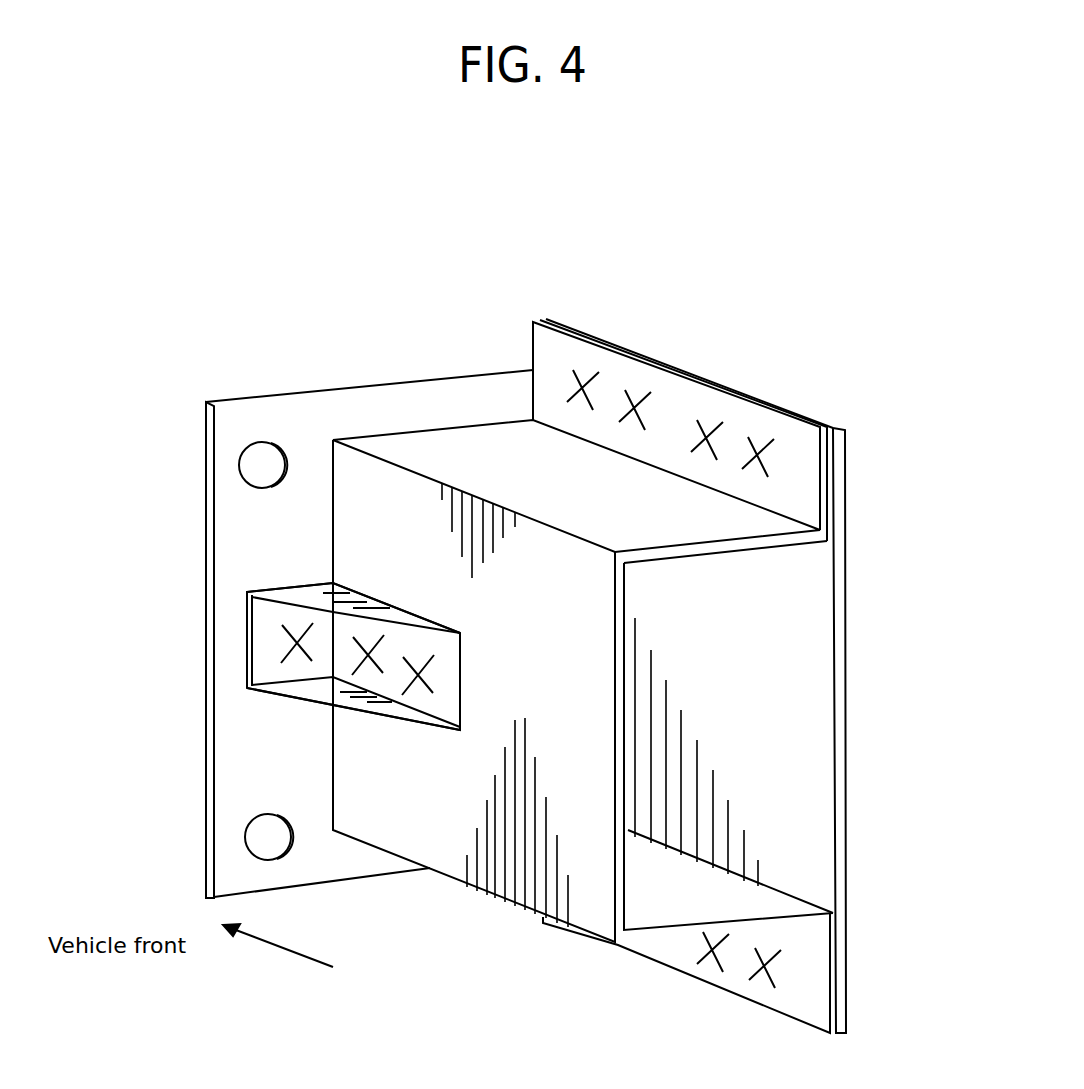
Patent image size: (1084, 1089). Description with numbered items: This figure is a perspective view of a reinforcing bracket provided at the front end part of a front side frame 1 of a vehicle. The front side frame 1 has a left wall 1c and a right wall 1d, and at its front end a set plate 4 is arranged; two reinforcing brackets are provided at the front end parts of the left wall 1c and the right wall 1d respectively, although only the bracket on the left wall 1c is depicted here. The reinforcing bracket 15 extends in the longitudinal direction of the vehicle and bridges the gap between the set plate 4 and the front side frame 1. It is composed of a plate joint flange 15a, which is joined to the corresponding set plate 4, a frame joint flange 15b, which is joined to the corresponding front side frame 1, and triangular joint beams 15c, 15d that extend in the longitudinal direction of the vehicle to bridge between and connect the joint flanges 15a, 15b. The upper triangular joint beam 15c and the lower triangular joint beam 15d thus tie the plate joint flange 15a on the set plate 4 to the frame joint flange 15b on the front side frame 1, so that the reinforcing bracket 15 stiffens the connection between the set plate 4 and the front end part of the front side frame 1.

The front side frame 1 is at (535, 462).
The left wall 1c is at (602, 908).
The right wall 1d is at (846, 706).
The set plate 4 is at (236, 422).
The reinforcing bracket 15 is at (273, 697).
The plate joint flange 15a is at (268, 627).
The frame joint flange 15b is at (441, 692).
The triangular joint beam 15c is at (356, 593).
The triangular joint beam 15d is at (369, 718).